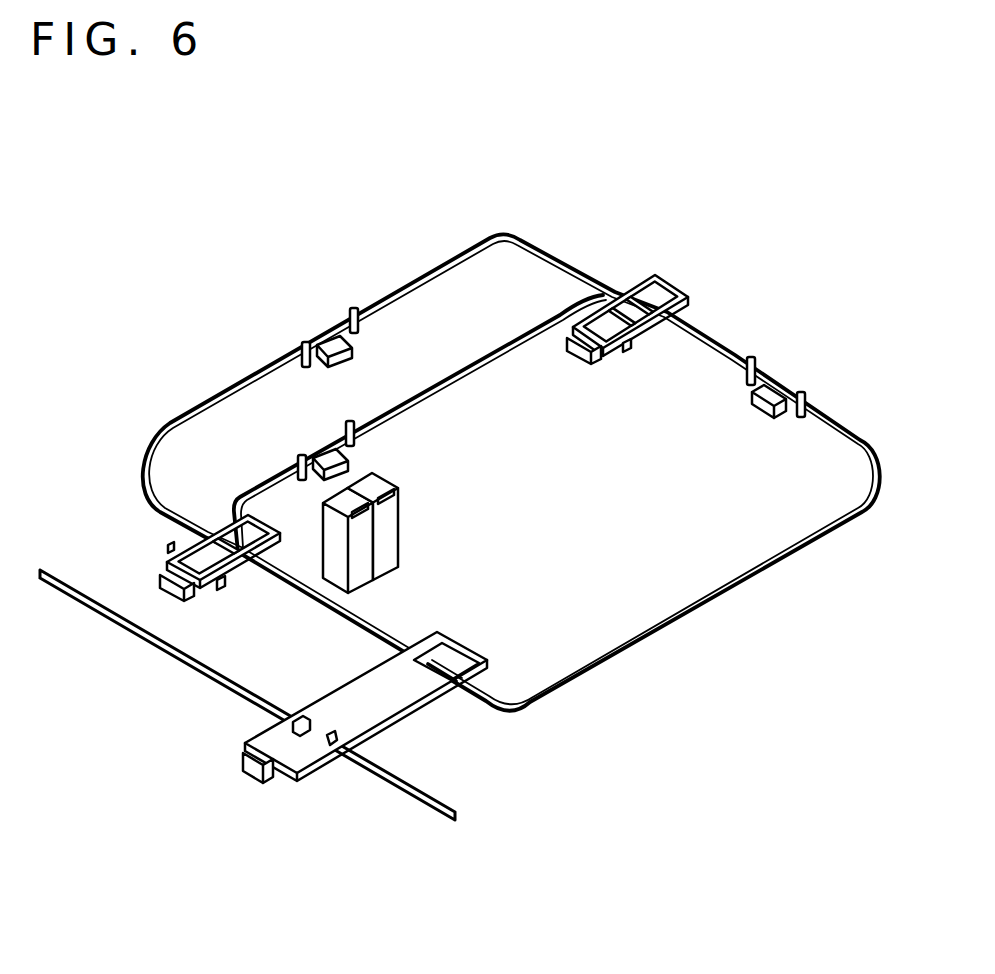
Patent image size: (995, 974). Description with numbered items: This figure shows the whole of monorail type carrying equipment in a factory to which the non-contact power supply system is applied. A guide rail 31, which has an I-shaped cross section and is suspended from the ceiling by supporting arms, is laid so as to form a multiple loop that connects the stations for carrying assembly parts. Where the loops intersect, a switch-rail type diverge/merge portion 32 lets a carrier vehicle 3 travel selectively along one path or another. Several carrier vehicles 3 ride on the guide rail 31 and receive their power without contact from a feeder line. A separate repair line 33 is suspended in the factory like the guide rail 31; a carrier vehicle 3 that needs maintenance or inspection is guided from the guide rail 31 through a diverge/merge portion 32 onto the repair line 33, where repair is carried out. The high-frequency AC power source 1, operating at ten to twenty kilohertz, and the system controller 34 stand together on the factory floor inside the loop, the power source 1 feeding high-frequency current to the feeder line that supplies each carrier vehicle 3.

The high-frequency AC power source 1 is at (360, 576).
The carrier vehicle 3 is at (327, 320).
The guide rail 31 is at (585, 682).
The diverge/merge portion 32 is at (673, 283).
The repair line 33 is at (117, 628).
The system controller 34 is at (392, 525).